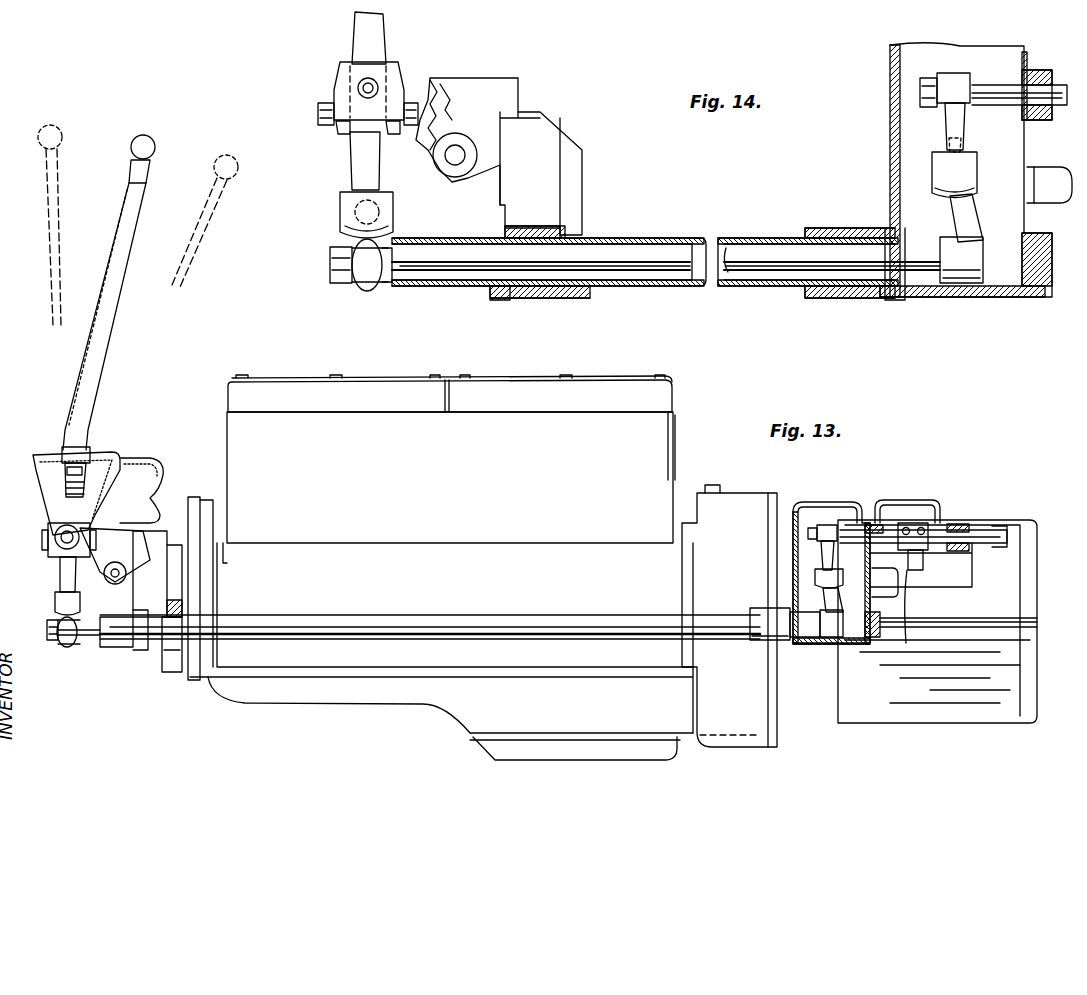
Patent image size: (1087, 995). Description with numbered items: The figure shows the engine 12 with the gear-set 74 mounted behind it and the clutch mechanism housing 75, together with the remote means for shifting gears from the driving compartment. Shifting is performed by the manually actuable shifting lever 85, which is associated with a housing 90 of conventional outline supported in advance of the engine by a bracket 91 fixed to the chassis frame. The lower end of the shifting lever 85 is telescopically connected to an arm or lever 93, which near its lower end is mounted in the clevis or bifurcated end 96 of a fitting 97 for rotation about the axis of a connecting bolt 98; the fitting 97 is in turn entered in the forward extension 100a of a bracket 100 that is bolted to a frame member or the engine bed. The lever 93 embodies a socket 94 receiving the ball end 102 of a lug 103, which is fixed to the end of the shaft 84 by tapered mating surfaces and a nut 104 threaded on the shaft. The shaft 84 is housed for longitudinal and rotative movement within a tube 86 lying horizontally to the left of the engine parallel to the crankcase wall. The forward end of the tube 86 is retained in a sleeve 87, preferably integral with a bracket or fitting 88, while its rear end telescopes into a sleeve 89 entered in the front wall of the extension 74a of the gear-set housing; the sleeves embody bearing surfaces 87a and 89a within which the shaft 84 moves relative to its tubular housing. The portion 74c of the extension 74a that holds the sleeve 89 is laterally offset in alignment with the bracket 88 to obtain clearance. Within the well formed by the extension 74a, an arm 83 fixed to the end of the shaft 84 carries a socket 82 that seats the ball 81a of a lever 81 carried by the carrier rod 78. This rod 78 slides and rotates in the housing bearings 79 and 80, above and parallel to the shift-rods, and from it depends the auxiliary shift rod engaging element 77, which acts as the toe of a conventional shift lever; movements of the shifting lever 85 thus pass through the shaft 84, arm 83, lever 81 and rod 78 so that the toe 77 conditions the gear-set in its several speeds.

In FIG. 13, the engine 12 is at (645, 460).
In FIG. 13, the gear-set 74 is at (932, 722).
In FIG. 14, the extension of the gear-set housing 74a is at (888, 110).
In FIG. 13, the extension of the gear-set housing 74a is at (810, 510).
In FIG. 14, the portion of the housing extension 74c is at (985, 300).
In FIG. 13, the portion of the housing extension 74c is at (850, 646).
In FIG. 13, the clutch mechanism housing 75 is at (752, 722).
In FIG. 13, the auxiliary shift rod engaging element 77 is at (910, 582).
In FIG. 14, the carrier rod 78 is at (998, 92).
In FIG. 13, the carrier rod 78 is at (945, 535).
In FIG. 13, the housing bearing 79 is at (894, 515).
In FIG. 13, the housing bearing 80 is at (958, 550).
In FIG. 14, the lever 81 is at (958, 125).
In FIG. 13, the lever 81 is at (828, 558).
In FIG. 14, the ball 81a is at (972, 158).
In FIG. 14, the socket 82 is at (975, 172).
In FIG. 13, the socket 82 is at (846, 576).
In FIG. 14, the arm 83 is at (965, 214).
In FIG. 13, the arm 83 is at (840, 610).
In FIG. 14, the shaft 84 is at (672, 272).
In FIG. 13, the shaft 84 is at (98, 642).
In FIG. 13, the shifting lever 85 is at (102, 372).
In FIG. 14, the tube 86 is at (668, 240).
In FIG. 13, the tube 86 is at (425, 618).
In FIG. 14, the sleeve 87 is at (553, 297).
In FIG. 13, the sleeve 87 is at (210, 622).
In FIG. 14, the bearing surface 87a is at (508, 298).
In FIG. 13, the bracket or fitting 88 is at (162, 660).
In FIG. 14, the sleeve 89 is at (812, 236).
In FIG. 13, the sleeve 89 is at (762, 642).
In FIG. 14, the bearing surface 89a is at (878, 292).
In FIG. 13, the housing 90 is at (100, 458).
In FIG. 13, the bracket 91 is at (142, 472).
In FIG. 14, the arm or lever 93 is at (352, 42).
In FIG. 13, the arm or lever 93 is at (74, 576).
In FIG. 14, the socket 94 is at (345, 210).
In FIG. 13, the socket 94 is at (84, 604).
In FIG. 13, the clevis or bifurcated end 96 is at (54, 556).
In FIG. 14, the fitting 97 is at (344, 132).
In FIG. 13, the fitting 97 is at (48, 532).
In FIG. 14, the connecting bolt 98 is at (320, 118).
In FIG. 14, the bracket 100 is at (540, 106).
In FIG. 13, the bracket 100 is at (112, 548).
In FIG. 14, the forward extension of the bracket 100a is at (462, 108).
In FIG. 13, the forward extension of the bracket 100a is at (128, 540).
In FIG. 14, the ball end 102 is at (380, 210).
In FIG. 14, the lug 103 is at (366, 290).
In FIG. 13, the lug 103 is at (66, 644).
In FIG. 14, the nut 104 is at (334, 264).
In FIG. 13, the nut 104 is at (50, 636).